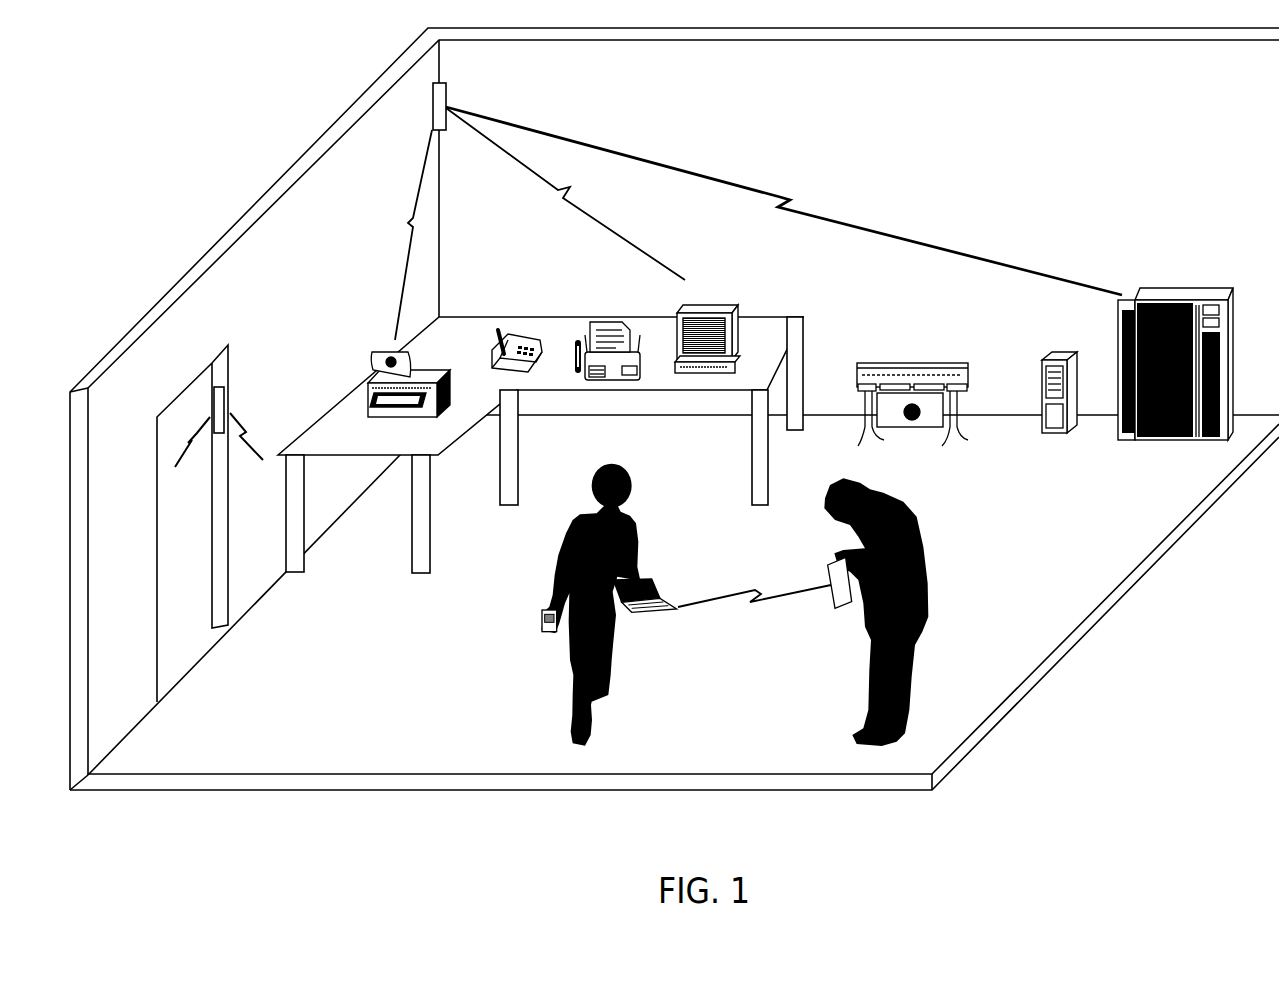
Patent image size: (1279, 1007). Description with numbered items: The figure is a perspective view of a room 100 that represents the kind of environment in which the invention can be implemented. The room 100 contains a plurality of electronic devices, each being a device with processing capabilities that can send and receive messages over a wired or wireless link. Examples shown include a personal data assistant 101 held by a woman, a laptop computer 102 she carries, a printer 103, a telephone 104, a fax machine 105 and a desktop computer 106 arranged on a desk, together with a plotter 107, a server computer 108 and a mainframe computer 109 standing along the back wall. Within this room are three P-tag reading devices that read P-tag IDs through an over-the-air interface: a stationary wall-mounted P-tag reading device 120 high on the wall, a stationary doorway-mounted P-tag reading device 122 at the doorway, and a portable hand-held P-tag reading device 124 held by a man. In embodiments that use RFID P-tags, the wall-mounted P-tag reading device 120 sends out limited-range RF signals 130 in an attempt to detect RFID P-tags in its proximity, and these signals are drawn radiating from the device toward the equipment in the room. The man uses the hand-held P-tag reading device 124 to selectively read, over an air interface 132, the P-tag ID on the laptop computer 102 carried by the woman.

The room 100 is at (1136, 690).
The personal data assistant 101 is at (550, 635).
The laptop computer 102 is at (655, 613).
The printer 103 is at (368, 392).
The telephone 104 is at (525, 335).
The fax machine 105 is at (605, 322).
The desktop computer 106 is at (710, 307).
The plotter 107 is at (912, 365).
The server computer 108 is at (1055, 352).
The mainframe computer 109 is at (1170, 290).
The P-tag reading device 120 is at (448, 95).
The P-tag reading device 122 is at (228, 380).
The P-tag reading device 124 is at (845, 610).
The RF signals 130 is at (725, 180).
The air interface 132 is at (742, 590).